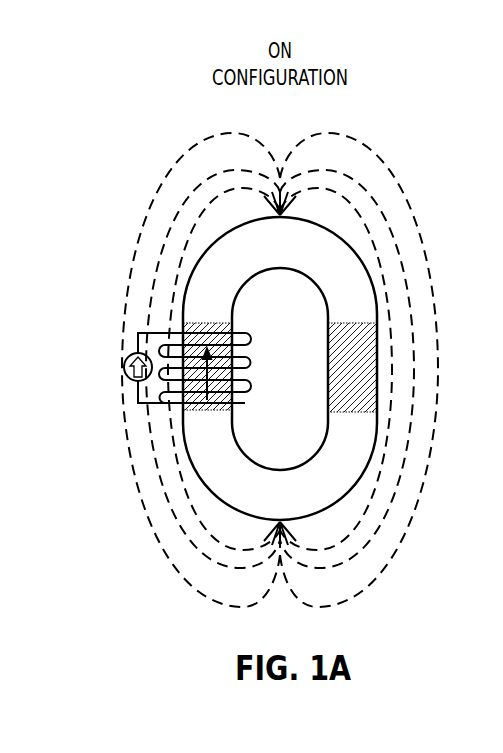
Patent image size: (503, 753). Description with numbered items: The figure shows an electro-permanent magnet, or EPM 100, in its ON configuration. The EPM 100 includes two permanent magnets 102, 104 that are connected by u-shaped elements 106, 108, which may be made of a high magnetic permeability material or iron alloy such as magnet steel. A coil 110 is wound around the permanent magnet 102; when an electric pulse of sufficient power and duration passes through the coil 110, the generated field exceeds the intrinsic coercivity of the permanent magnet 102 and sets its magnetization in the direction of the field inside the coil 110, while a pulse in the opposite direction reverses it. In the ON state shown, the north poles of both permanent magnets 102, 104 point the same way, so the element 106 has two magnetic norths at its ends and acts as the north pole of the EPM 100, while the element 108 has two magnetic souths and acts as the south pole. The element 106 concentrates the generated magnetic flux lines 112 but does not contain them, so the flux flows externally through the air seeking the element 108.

The electro-permanent magnet (EPM) 100 is at (124, 159).
The permanent magnet 102 is at (183, 323).
The permanent magnet 104 is at (363, 357).
The u-shaped element 106 is at (265, 252).
The u-shaped element 108 is at (262, 472).
The coil 110 is at (245, 352).
The magnetic flux lines 112 is at (389, 156).